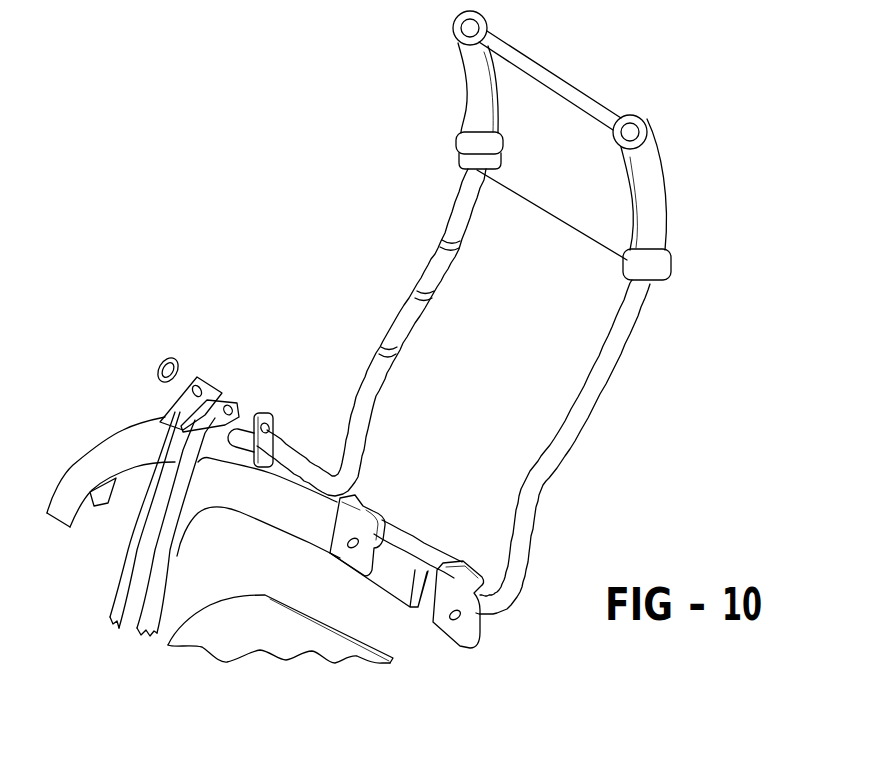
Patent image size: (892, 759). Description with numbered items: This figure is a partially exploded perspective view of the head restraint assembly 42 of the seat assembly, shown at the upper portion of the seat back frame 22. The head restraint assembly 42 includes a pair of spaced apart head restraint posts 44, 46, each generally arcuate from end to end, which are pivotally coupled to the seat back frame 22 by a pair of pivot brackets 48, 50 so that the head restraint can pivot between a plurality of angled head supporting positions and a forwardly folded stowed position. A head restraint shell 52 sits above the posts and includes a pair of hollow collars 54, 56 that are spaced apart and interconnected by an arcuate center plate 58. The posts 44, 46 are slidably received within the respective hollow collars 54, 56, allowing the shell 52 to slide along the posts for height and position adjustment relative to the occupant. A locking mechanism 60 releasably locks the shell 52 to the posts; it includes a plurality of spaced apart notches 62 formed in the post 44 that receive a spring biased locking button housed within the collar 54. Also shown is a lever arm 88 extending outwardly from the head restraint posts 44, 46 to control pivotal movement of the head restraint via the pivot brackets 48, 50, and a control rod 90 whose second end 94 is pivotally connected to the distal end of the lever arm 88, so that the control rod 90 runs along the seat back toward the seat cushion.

The seat back frame 22 is at (114, 596).
The head restraint assembly 42 is at (668, 143).
The head restraint post 44 is at (370, 440).
The head restraint post 46 is at (590, 412).
The pivot bracket 48 is at (357, 500).
The pivot bracket 50 is at (462, 645).
The head restraint shell 52 is at (574, 80).
The hollow collar 54 is at (466, 72).
The hollow collar 56 is at (670, 235).
The arcuate center plate 58 is at (568, 208).
The locking mechanism 60 is at (457, 146).
The notches 62 is at (458, 250).
The lever arm 88 is at (270, 425).
The control rod 90 is at (148, 567).
The second end 94 is at (238, 402).